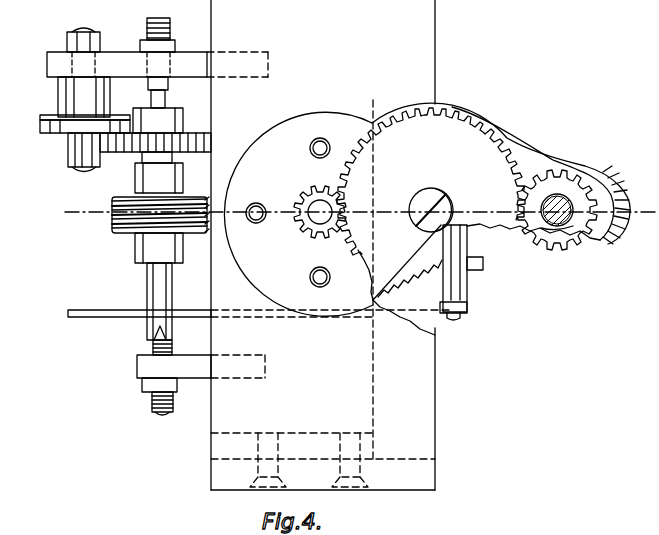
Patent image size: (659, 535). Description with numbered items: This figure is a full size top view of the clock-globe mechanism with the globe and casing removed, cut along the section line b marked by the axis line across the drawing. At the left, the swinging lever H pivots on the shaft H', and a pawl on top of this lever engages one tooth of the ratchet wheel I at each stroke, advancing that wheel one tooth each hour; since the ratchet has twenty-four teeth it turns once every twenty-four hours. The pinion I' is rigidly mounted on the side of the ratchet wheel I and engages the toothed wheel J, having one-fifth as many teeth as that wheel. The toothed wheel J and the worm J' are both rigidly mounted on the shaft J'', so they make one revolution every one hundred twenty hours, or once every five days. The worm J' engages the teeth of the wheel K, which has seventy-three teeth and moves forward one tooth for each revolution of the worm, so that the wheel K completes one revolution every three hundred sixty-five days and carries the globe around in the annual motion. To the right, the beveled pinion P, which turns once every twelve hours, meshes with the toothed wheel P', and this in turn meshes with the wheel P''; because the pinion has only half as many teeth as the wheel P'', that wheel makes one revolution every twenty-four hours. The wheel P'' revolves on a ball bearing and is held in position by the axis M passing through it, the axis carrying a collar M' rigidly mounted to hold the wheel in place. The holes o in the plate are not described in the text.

The shaft H' is at (67, 72).
The swinging lever H is at (66, 110).
The ratchet wheel I is at (71, 128).
The pinion I' is at (70, 152).
The toothed wheel J is at (160, 105).
The worm J' is at (147, 235).
The shaft J'' is at (141, 324).
The toothed wheel K is at (204, 243).
The beveled pinion P is at (312, 205).
The holes o is at (318, 216).
The toothed wheel P' is at (431, 221).
The wheel P'' is at (559, 195).
The axis M is at (554, 226).
The collar M' is at (568, 235).
The section line b b is at (360, 202).